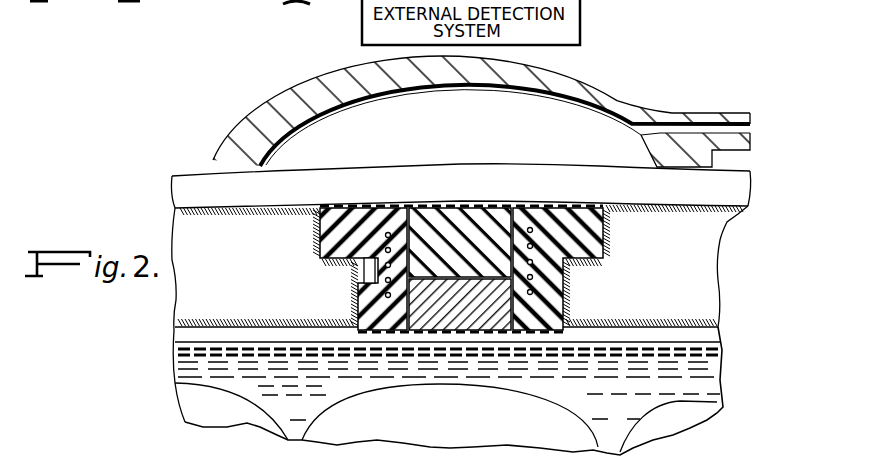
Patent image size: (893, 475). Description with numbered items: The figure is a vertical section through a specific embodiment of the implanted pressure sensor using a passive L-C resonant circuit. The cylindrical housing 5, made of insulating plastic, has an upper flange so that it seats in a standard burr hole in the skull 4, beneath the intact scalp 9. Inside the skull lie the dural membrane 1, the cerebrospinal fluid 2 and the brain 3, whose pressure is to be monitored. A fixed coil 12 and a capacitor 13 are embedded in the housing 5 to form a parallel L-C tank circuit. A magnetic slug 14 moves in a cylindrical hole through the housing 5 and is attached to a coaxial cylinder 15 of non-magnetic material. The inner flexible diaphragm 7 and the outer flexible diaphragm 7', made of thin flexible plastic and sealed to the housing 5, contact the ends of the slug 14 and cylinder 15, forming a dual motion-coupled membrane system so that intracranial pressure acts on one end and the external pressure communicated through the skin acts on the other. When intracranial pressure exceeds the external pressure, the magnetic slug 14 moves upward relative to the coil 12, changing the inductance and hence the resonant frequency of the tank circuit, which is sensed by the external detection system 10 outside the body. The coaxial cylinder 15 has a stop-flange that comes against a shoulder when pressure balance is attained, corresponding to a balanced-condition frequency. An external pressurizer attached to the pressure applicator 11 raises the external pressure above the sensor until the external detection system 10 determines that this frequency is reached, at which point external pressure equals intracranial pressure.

The dural membrane 1 is at (683, 351).
The cerebrospinal fluid 2 is at (612, 386).
The brain 3 is at (464, 424).
The skull 4 is at (683, 267).
The housing 5 is at (381, 333).
The inner flexible diaphragm 7 is at (460, 347).
The outer flexible diaphragm 7' is at (461, 172).
The scalp 9 is at (186, 188).
The external detection system 10 is at (497, 45).
The pressure applicator 11 is at (593, 90).
The fixed coil 12 is at (548, 268).
The capacitor 13 is at (356, 283).
The magnetic slug 14 is at (439, 333).
The coaxial cylinder 15 is at (407, 207).